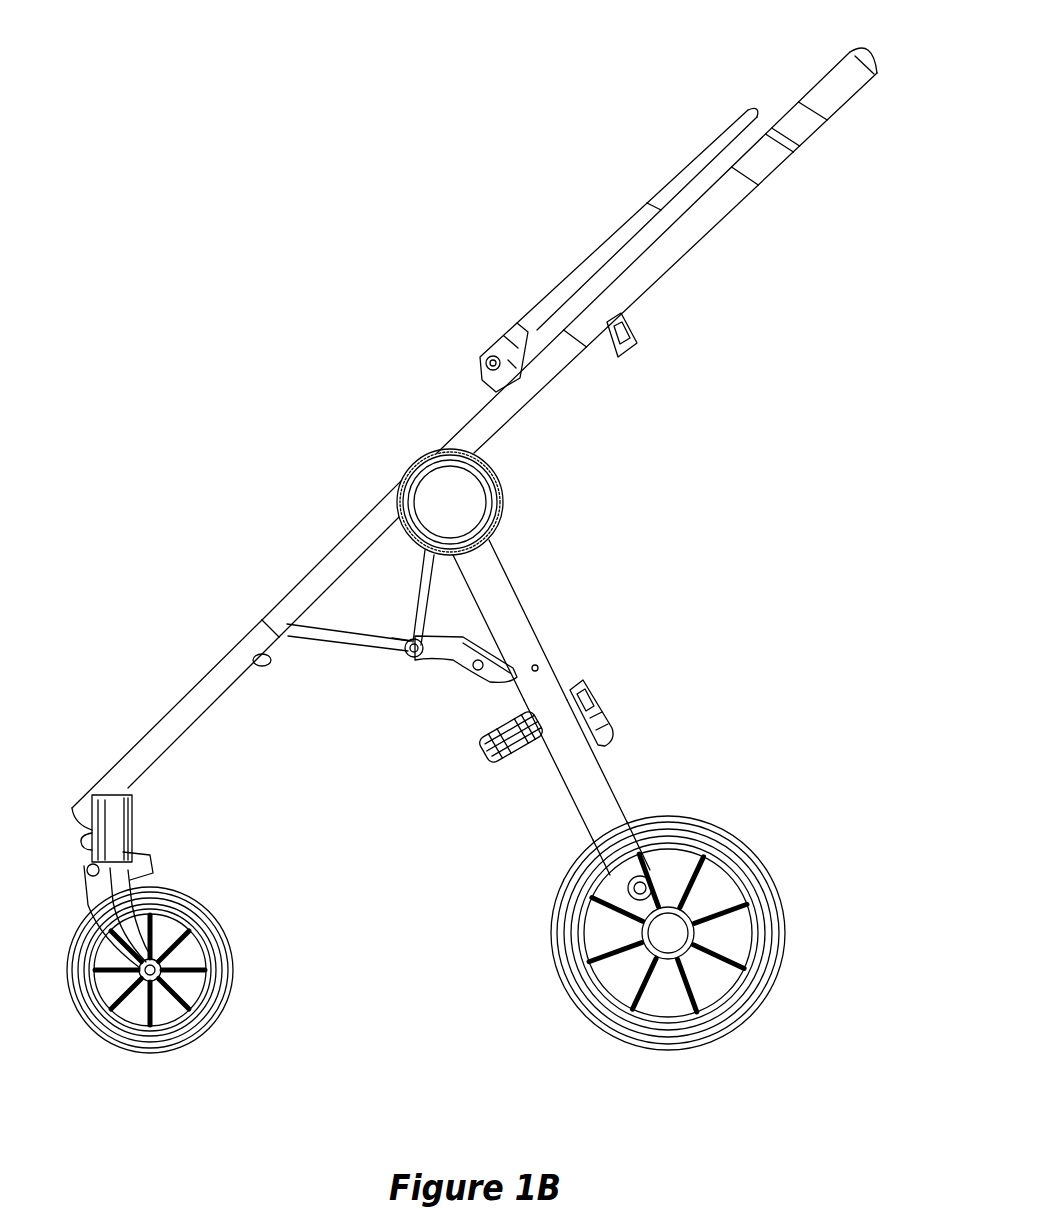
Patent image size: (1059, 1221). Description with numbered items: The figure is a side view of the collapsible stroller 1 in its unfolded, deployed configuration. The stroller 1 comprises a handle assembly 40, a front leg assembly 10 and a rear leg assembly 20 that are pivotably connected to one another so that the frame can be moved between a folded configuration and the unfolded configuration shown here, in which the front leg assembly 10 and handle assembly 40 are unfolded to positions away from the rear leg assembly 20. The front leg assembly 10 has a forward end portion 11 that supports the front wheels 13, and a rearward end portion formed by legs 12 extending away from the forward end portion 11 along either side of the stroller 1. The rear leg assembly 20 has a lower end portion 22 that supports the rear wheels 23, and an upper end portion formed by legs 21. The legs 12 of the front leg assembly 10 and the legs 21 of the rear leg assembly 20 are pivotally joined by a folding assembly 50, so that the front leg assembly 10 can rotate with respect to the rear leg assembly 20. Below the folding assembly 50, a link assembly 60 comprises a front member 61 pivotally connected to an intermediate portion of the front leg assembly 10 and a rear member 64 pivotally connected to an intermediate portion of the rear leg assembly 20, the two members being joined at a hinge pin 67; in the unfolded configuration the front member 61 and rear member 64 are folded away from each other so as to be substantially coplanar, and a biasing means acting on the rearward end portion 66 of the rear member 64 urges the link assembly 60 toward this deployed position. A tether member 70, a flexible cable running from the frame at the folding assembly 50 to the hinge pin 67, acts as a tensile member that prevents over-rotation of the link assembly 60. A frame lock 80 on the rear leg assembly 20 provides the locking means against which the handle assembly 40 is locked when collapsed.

The collapsible stroller 1 is at (315, 436).
The front leg assembly 10 is at (190, 638).
The forward end portion 11 is at (136, 741).
The legs 12 is at (332, 565).
The front wheels 13 is at (110, 1037).
The rear leg assembly 20 is at (632, 677).
The legs 21 is at (532, 612).
The lower end portion 22 is at (598, 776).
The rear wheels 23 is at (568, 1006).
The handle assembly 40 is at (718, 287).
The folding assembly 50 is at (513, 496).
The link assembly 60 is at (372, 740).
The front member 61 is at (338, 675).
The rear member 64 is at (472, 682).
The rearward end portion 66 is at (522, 668).
The hinge pin 67 is at (395, 640).
The tether member 70 is at (423, 600).
The frame lock 80 is at (488, 762).